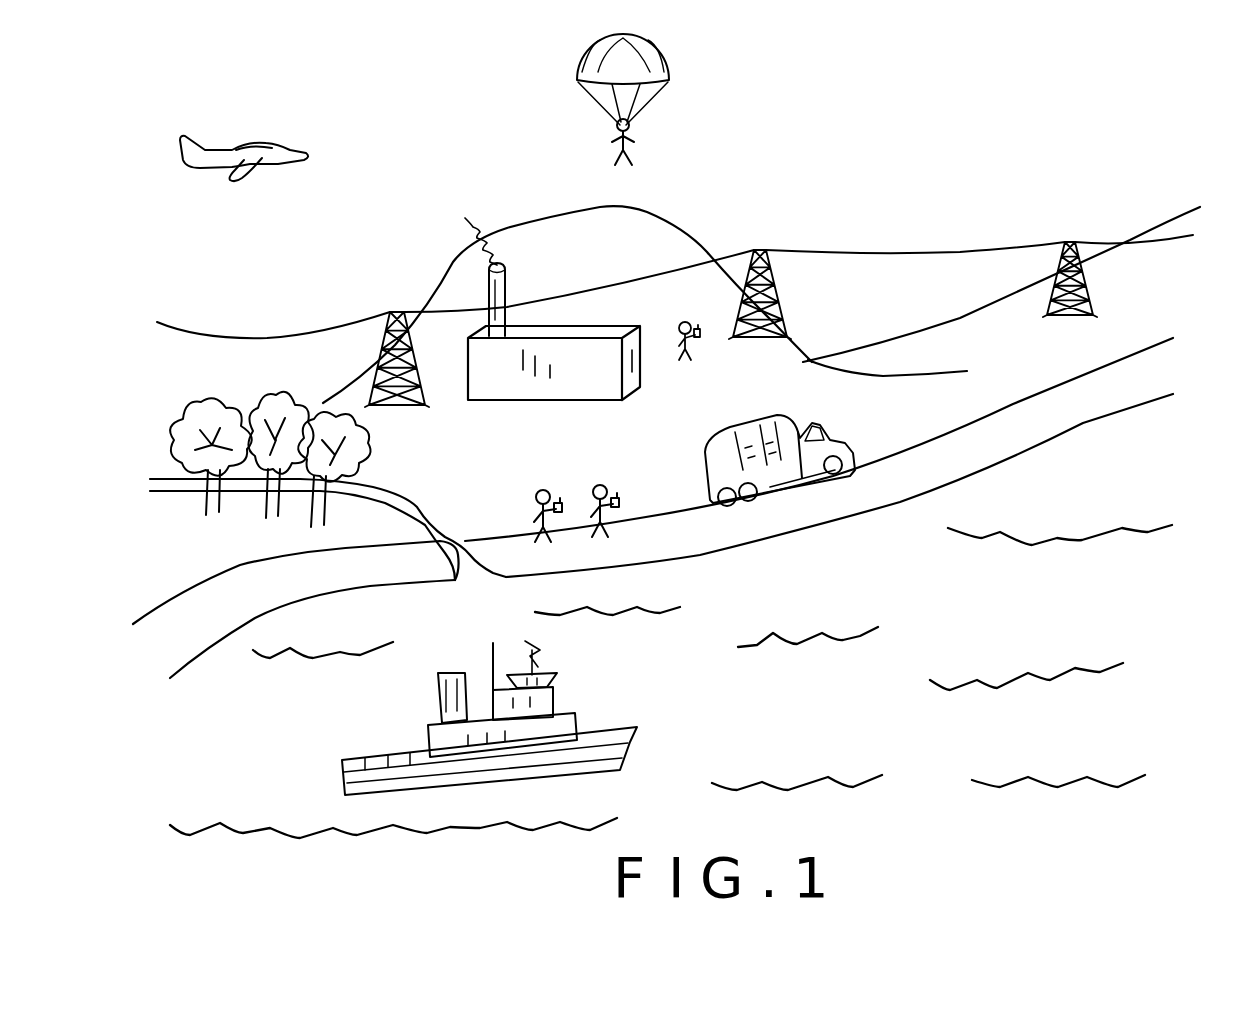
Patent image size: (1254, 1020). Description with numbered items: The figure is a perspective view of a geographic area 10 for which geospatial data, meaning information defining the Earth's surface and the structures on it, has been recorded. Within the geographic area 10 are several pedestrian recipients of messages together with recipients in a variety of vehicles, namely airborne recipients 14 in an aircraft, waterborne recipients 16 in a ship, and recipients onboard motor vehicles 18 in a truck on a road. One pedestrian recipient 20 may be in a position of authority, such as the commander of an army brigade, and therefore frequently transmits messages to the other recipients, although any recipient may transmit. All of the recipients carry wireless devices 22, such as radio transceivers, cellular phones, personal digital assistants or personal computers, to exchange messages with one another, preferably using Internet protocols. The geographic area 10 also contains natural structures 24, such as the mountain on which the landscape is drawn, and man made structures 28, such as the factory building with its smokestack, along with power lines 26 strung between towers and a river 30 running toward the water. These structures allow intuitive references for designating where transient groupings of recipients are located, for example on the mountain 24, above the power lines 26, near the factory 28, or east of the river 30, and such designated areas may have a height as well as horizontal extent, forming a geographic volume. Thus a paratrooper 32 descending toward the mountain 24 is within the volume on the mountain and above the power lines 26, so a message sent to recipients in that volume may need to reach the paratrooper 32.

The geographic area 10 is at (546, 482).
The airborne recipients 14 is at (267, 142).
The waterborne recipients 16 is at (573, 773).
The recipients onboard motor vehicles 18 is at (790, 480).
The pedestrian recipient 20 is at (687, 347).
The wireless devices 22 is at (627, 502).
The natural structures 24 is at (560, 276).
The power lines 26 is at (813, 250).
The man made structures 28 is at (560, 404).
The river 30 is at (388, 500).
The paratrooper 32 is at (627, 139).